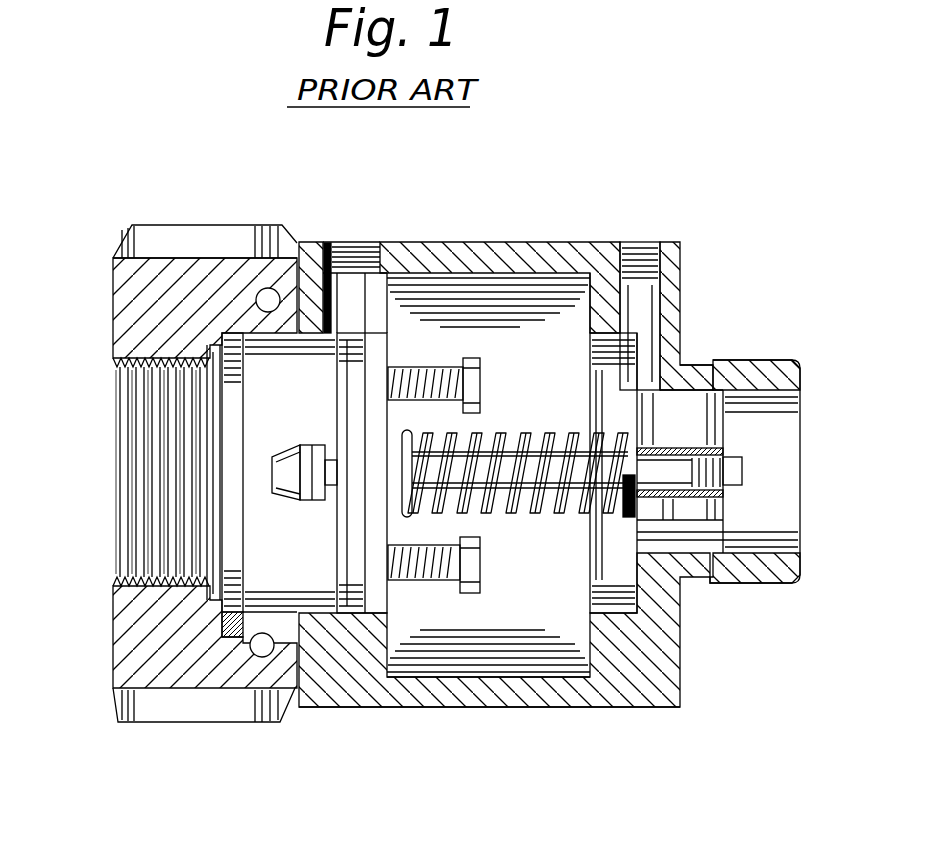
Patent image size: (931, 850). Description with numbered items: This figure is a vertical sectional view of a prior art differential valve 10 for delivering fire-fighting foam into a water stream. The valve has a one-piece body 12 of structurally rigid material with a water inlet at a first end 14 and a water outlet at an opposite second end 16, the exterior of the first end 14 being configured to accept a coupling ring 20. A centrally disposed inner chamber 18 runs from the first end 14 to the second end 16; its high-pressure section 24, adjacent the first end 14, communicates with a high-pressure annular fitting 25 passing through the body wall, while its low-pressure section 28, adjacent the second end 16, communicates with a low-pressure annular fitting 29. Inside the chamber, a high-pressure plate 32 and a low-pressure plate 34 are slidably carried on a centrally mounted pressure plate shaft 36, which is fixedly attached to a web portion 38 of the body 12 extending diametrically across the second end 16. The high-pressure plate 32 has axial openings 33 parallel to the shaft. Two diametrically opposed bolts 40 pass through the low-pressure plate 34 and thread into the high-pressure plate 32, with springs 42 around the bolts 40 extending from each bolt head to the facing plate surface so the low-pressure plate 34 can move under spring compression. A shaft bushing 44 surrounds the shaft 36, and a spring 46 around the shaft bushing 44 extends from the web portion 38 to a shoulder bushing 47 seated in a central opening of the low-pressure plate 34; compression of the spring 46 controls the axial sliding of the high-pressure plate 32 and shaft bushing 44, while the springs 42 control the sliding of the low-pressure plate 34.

The differential valve 10 is at (487, 226).
The body 12 is at (488, 712).
The first end 14 is at (262, 388).
The second end 16 is at (780, 478).
The inner chamber 18 is at (560, 590).
The coupling ring 20 is at (143, 653).
The high-pressure section 24 is at (284, 560).
The high-pressure annular fitting 25 is at (357, 242).
The low-pressure section 28 is at (610, 383).
The low-pressure annular fitting 29 is at (636, 245).
The high-pressure plate 32 is at (350, 540).
The openings 33 is at (320, 240).
The low-pressure plate 34 is at (348, 422).
The pressure plate shaft 36 is at (666, 473).
The web portion 38 is at (672, 395).
The bolts 40 is at (482, 380).
The springs 42 is at (447, 365).
The shaft bushing 44 is at (478, 514).
The spring 46 is at (553, 430).
The shoulder bushing 47 is at (422, 454).